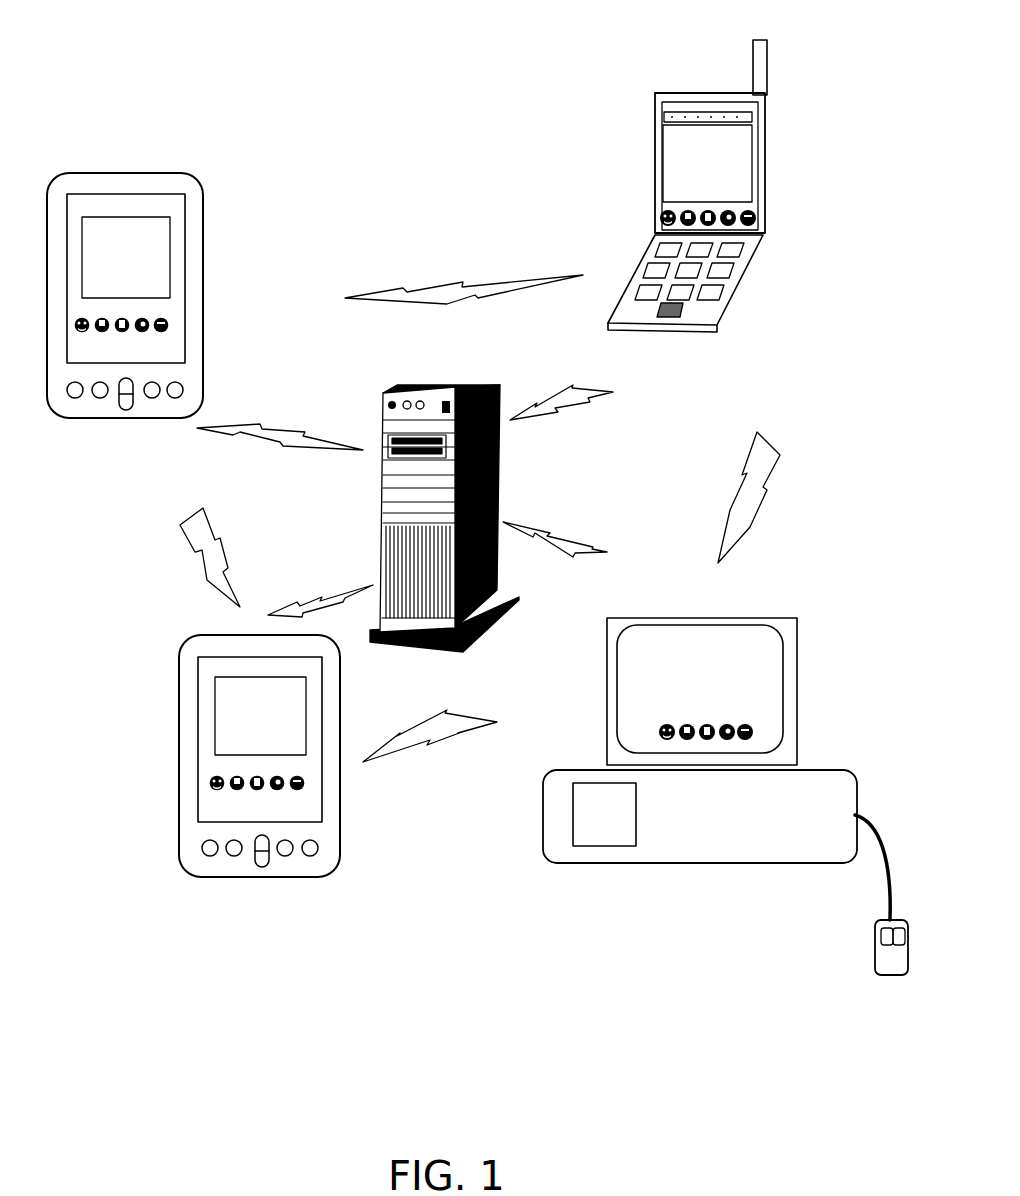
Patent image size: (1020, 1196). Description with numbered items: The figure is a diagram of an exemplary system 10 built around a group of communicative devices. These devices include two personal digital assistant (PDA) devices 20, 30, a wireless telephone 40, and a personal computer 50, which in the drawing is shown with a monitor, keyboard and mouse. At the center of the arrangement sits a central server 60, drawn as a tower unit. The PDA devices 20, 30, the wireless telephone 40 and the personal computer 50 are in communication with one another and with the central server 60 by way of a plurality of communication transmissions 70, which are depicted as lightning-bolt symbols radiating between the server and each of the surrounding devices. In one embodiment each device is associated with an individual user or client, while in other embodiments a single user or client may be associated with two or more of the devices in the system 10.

The system 10 is at (571, 77).
The personal digital assistant (PDA) device 20 is at (203, 293).
The personal digital assistant (PDA) device 30 is at (340, 803).
The wireless telephone 40 is at (762, 248).
The personal computer 50 is at (723, 863).
The central server 60 is at (498, 622).
The communication transmissions 70 is at (447, 303).